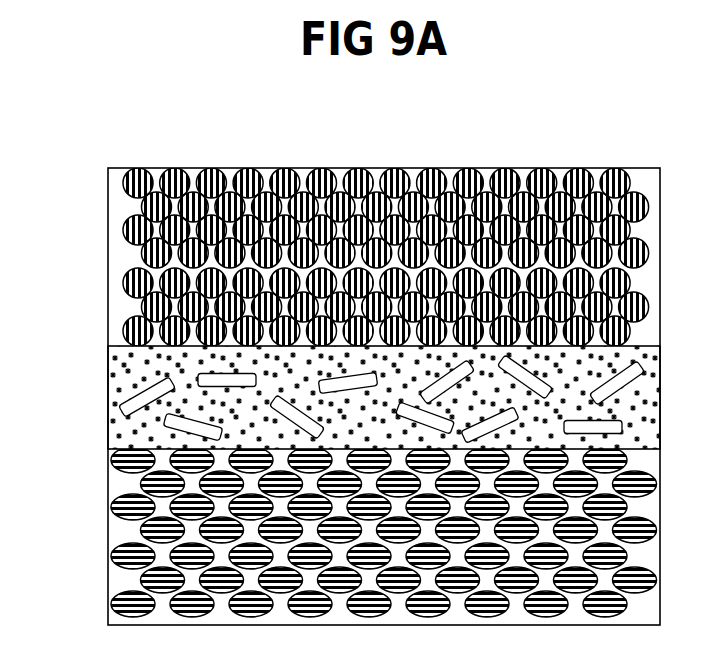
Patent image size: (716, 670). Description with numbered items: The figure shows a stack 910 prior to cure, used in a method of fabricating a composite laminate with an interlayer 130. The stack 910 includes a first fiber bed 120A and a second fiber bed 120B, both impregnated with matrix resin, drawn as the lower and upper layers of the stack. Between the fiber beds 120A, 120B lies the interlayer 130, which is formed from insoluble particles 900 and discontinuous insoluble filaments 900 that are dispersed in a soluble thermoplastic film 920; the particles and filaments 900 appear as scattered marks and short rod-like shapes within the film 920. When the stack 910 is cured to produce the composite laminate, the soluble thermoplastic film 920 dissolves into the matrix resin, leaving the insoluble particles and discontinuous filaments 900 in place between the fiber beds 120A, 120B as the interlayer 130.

The stack 910 is at (379, 373).
The second fiber bed 120B is at (198, 167).
The first fiber bed 120A is at (217, 625).
The interlayer 130 is at (379, 409).
The insoluble particles or discontinuous insoluble filaments 900 is at (132, 398).
The soluble thermoplastic film 920 is at (127, 432).